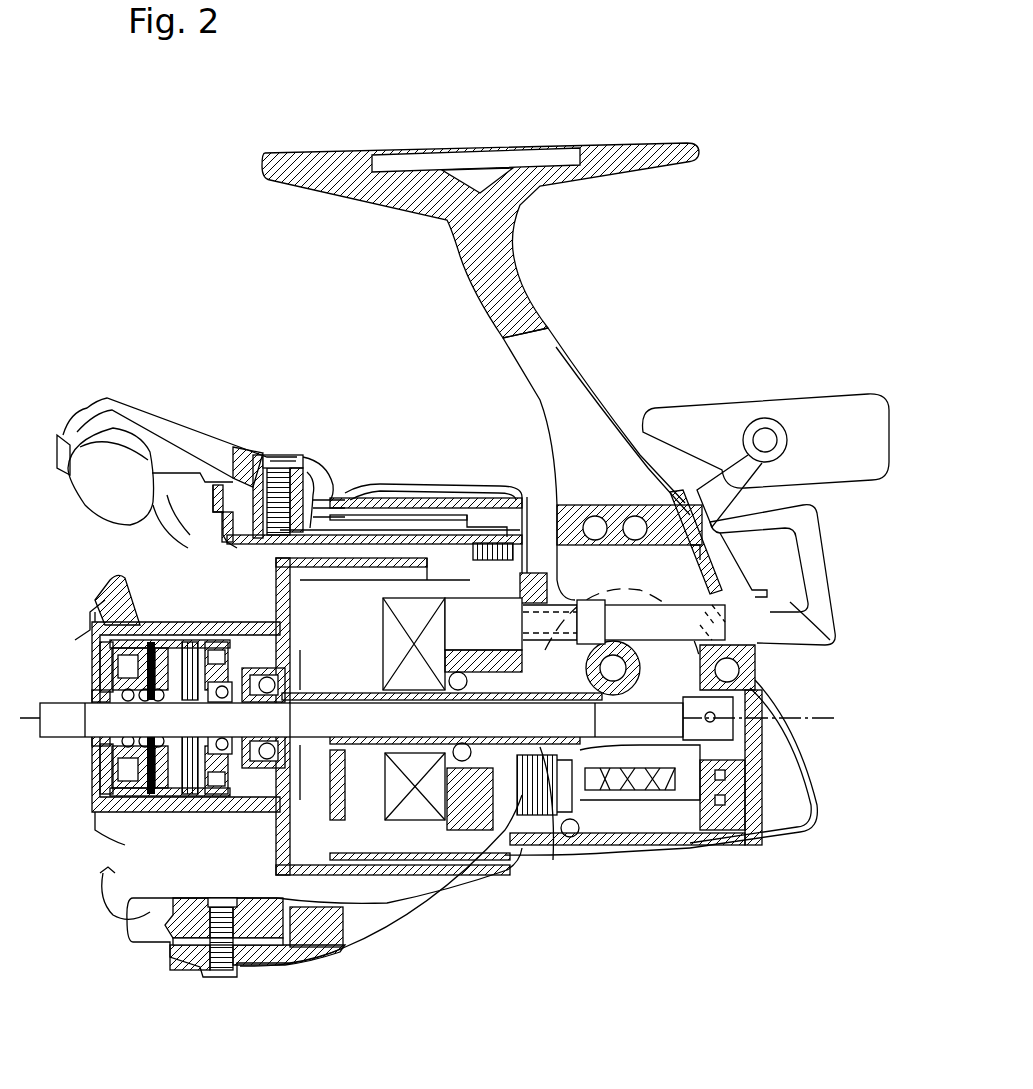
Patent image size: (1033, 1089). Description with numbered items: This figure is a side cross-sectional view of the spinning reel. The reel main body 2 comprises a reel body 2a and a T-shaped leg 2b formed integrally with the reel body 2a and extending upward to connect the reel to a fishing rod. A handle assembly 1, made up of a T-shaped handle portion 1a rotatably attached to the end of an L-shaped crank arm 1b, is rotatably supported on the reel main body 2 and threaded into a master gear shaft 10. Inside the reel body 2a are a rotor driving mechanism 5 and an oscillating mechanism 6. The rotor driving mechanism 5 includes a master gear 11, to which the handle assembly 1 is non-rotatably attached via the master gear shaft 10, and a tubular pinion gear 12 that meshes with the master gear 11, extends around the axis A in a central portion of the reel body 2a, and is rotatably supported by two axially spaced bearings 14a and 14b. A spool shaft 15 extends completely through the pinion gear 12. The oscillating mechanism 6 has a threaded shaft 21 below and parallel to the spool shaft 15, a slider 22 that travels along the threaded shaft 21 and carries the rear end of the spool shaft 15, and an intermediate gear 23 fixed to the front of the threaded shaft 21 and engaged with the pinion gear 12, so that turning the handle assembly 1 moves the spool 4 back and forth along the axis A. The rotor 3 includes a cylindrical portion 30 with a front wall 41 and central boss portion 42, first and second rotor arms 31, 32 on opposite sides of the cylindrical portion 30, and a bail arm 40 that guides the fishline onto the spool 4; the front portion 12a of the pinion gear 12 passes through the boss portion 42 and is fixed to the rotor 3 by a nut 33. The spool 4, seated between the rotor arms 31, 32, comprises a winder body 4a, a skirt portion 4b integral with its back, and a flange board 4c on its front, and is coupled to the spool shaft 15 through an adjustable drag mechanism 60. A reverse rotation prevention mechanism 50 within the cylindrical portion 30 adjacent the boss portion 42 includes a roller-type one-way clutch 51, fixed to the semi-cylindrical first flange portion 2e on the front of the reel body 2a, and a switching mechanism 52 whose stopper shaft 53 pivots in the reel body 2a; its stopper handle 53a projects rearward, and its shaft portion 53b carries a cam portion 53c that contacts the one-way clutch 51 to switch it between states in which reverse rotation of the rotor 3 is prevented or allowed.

The handle assembly 1 is at (733, 450).
The handle portion 1a is at (787, 395).
The crank arm 1b is at (678, 483).
The reel main body 2 is at (808, 717).
The reel body 2a is at (763, 670).
The leg 2b is at (575, 387).
The first flange portion 2e is at (445, 835).
The rotor 3 is at (400, 877).
The spool 4 is at (187, 827).
The winder body 4a is at (200, 632).
The skirt portion 4b is at (362, 558).
The flange board 4c is at (133, 577).
The rotor driving mechanism 5 is at (600, 605).
The oscillating mechanism 6 is at (640, 845).
The master gear shaft 10 is at (528, 703).
The master gear 11 is at (668, 840).
The pinion gear 12 is at (500, 750).
The front portion 12a is at (348, 740).
The bearing 14a is at (440, 585).
The bearing 14b is at (580, 830).
The spool shaft 15 is at (718, 835).
The threaded shaft 21 is at (655, 830).
The slider 22 is at (758, 823).
The intermediate gear 23 is at (565, 840).
The cylindrical portion 30 is at (420, 853).
The first rotor arm 31 is at (310, 457).
The second rotor arm 32 is at (297, 957).
The nut 33 is at (345, 690).
The bail arm 40 is at (112, 533).
The front wall 41 is at (305, 597).
The boss portion 42 is at (373, 680).
The reverse rotation prevention mechanism 50 is at (432, 590).
The one-way clutch 51 is at (438, 612).
The switching mechanism 52 is at (620, 590).
The stopper shaft 53 is at (690, 598).
The stopper handle 53a is at (815, 597).
The shaft portion 53b is at (640, 610).
The cam portion 53c is at (503, 617).
The drag mechanism 60 is at (222, 637).
The axis A is at (805, 718).